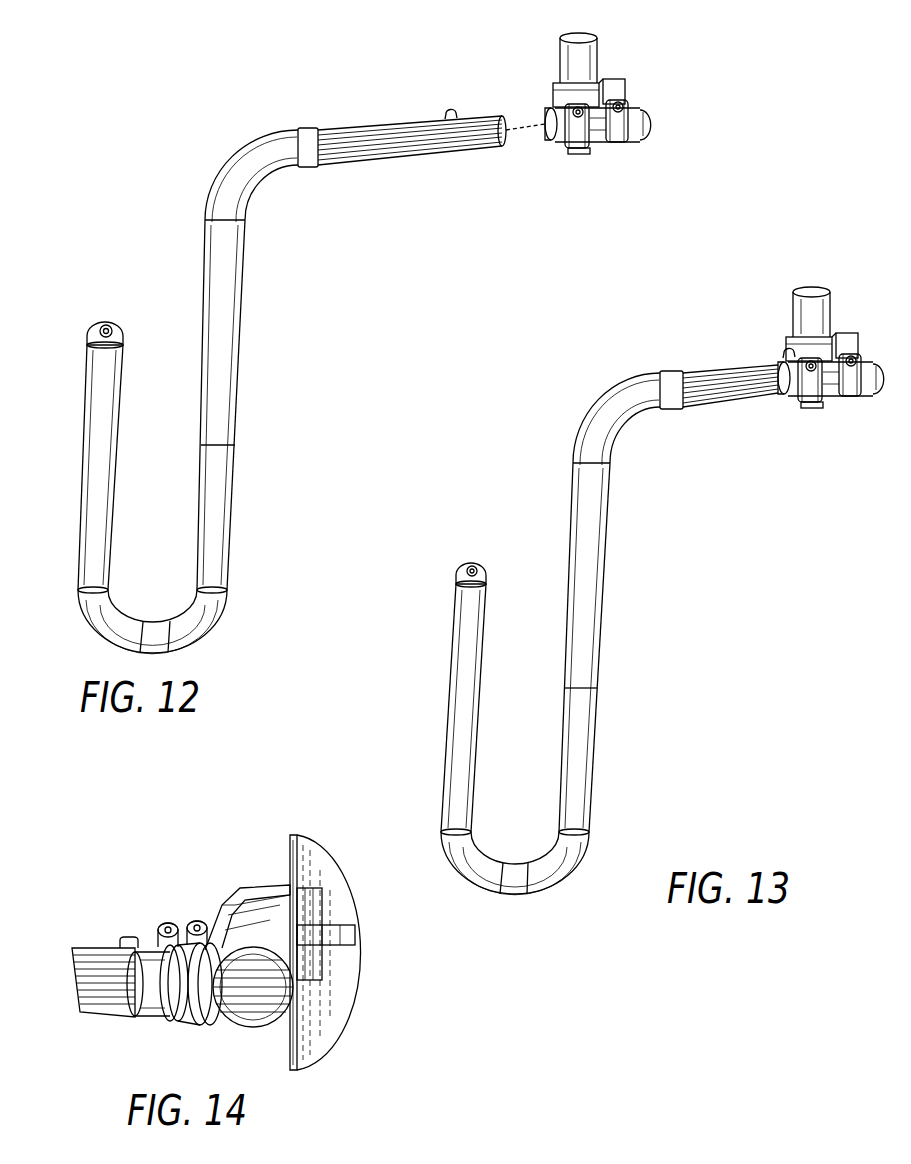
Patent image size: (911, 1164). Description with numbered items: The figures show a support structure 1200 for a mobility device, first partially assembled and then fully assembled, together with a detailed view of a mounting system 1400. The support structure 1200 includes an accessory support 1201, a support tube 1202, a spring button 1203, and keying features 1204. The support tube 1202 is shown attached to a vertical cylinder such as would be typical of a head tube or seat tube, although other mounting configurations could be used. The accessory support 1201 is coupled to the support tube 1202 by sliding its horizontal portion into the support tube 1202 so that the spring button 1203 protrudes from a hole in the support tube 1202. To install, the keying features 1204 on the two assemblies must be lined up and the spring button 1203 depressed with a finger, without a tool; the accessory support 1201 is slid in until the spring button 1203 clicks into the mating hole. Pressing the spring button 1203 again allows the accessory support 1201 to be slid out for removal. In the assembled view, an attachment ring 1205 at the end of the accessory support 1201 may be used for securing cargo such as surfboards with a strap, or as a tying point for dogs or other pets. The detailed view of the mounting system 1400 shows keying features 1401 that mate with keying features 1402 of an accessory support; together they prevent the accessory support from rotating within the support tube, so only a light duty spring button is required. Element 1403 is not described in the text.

In FIG. 12, the support structure 1200 is at (378, 343).
In FIG. 13, the support structure 1200 is at (698, 561).
In FIG. 12, the accessory support 1201 is at (206, 262).
In FIG. 13, the accessory support 1201 is at (610, 622).
In FIG. 12, the support tube 1202 is at (626, 140).
In FIG. 13, the support tube 1202 is at (827, 403).
In FIG. 12, the spring button 1203 is at (447, 113).
In FIG. 13, the spring button 1203 is at (809, 354).
In FIG. 12, the keying features 1204 is at (541, 127).
In FIG. 13, the keying features 1204 is at (778, 398).
In FIG. 13, the attachment ring 1205 is at (479, 551).
In FIG. 14, the mounting system 1400 is at (208, 862).
In FIG. 14, the keying features 1401 is at (216, 994).
In FIG. 14, the keying features 1402 is at (118, 999).
In FIG. 14, the detent button 1403 is at (128, 931).